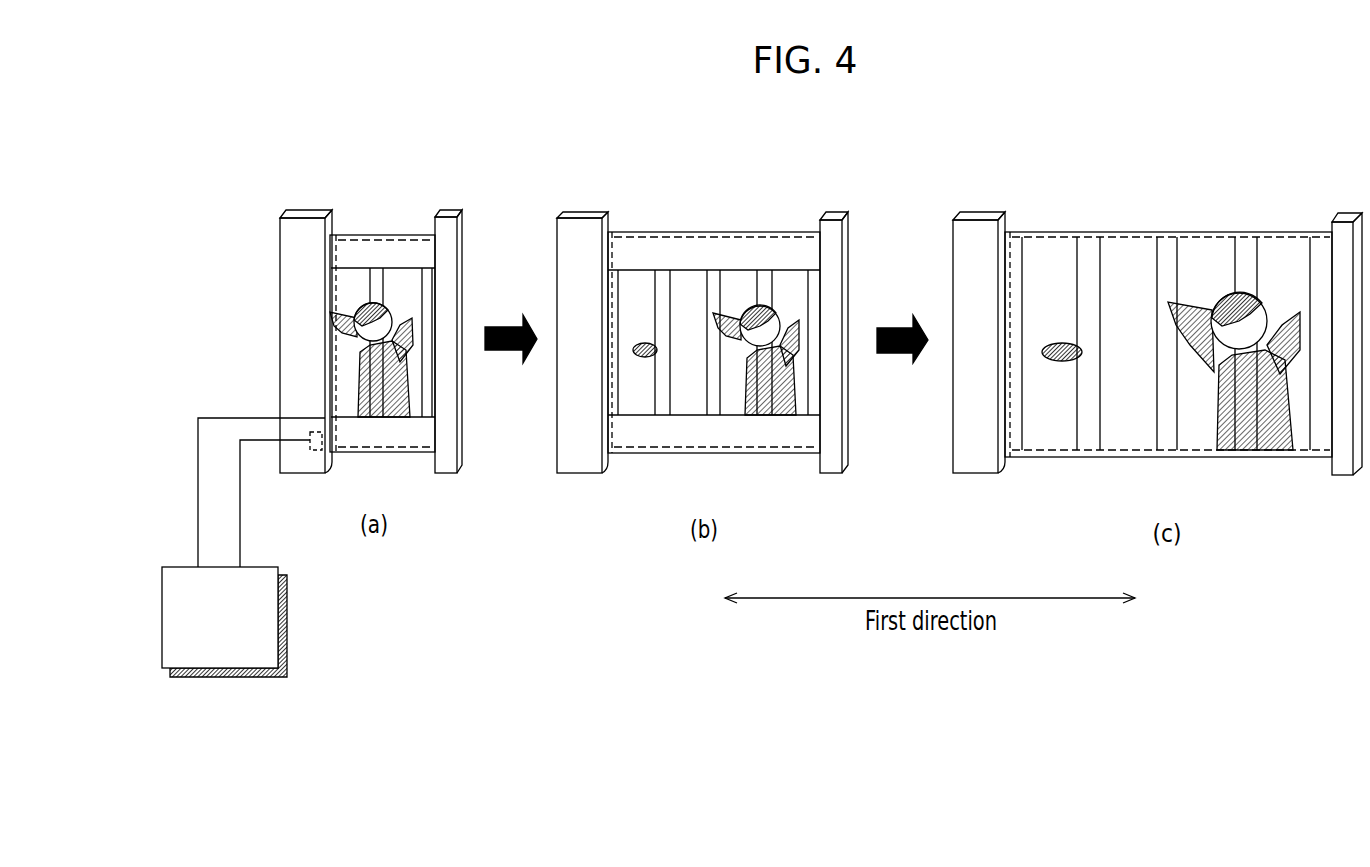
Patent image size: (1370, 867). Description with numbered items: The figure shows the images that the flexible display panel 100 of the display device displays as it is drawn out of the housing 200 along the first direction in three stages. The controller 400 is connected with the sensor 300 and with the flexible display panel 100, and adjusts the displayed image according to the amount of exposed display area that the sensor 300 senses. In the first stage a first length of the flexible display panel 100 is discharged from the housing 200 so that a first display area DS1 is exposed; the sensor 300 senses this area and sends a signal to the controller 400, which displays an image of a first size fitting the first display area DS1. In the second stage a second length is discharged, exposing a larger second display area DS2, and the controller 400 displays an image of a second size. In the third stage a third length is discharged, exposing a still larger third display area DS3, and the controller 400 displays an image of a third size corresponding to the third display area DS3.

The flexible display panel 100 is at (374, 296).
The housing 200 is at (295, 293).
The sensor 300 is at (313, 452).
The controller 400 is at (287, 618).
The first display area DS1 is at (400, 237).
The second display area DS2 is at (705, 233).
The third display area DS3 is at (1197, 233).